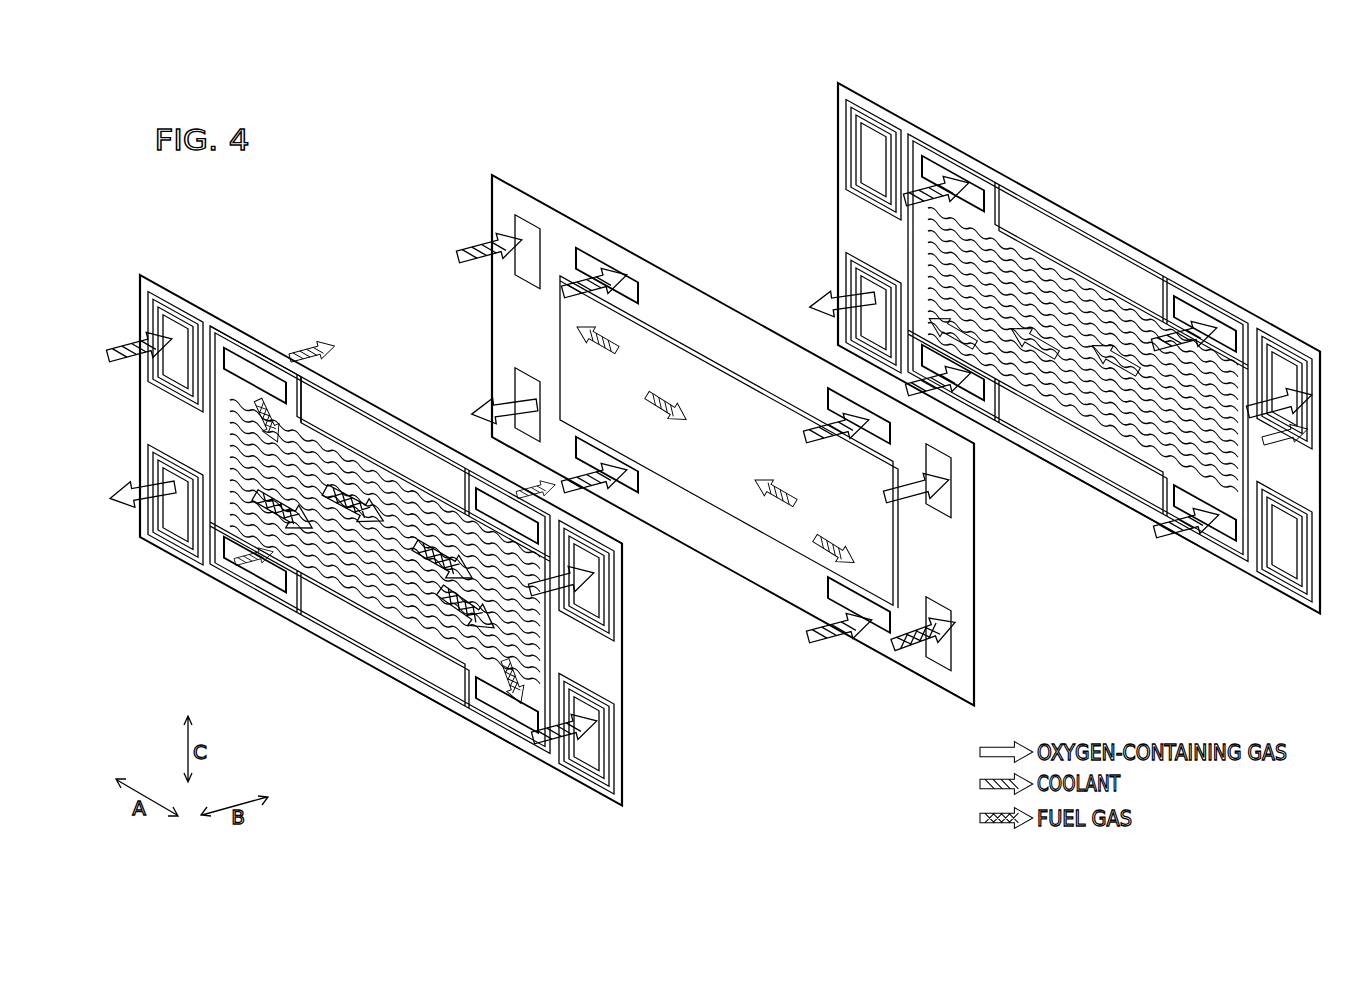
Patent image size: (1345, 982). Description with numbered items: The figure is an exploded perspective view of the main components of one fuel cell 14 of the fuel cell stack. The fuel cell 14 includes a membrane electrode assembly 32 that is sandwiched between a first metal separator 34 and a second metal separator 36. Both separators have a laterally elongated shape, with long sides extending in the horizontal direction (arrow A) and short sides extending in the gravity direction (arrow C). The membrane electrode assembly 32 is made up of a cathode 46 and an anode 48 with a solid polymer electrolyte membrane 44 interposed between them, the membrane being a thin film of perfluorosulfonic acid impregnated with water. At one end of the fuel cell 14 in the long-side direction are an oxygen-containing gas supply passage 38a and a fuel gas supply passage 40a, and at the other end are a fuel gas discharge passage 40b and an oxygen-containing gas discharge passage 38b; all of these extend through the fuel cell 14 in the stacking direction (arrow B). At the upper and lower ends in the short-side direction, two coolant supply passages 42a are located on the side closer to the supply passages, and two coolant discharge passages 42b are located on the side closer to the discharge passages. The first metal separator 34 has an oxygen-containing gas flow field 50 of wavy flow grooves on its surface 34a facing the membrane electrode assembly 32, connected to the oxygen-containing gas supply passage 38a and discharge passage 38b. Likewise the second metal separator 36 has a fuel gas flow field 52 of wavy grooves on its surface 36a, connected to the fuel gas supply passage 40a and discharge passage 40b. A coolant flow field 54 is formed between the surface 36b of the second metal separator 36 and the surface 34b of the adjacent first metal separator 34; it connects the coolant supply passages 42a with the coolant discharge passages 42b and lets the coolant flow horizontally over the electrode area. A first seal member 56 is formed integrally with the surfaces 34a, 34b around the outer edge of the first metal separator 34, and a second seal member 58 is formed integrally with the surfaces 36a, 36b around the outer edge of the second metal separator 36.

The fuel cell 14 is at (296, 207).
The membrane electrode assembly 32 is at (507, 180).
The first metal separator 34 is at (889, 103).
The surface of first metal separator 34a is at (1110, 482).
The surface of first metal separator 34b is at (1140, 472).
The second metal separator 36 is at (150, 282).
The surface of second metal separator 36a is at (445, 668).
The surface of second metal separator 36b is at (418, 688).
The oxygen-containing gas supply passage 38a is at (595, 598).
The oxygen-containing gas discharge passage 38b is at (178, 556).
The fuel gas supply passage 40a is at (600, 750).
The fuel gas discharge passage 40b is at (182, 340).
The coolant supply passage 42a is at (500, 702).
The coolant discharge passage 42b is at (242, 372).
The solid polymer electrolyte membrane 44 is at (950, 686).
The cathode 46 is at (700, 378).
The anode 48 is at (780, 528).
The oxygen-containing gas flow field 50 is at (1050, 402).
The fuel gas flow field 52 is at (318, 405).
The coolant flow field 54 is at (327, 588).
The first seal member 56 is at (1022, 222).
The second seal member 58 is at (242, 340).